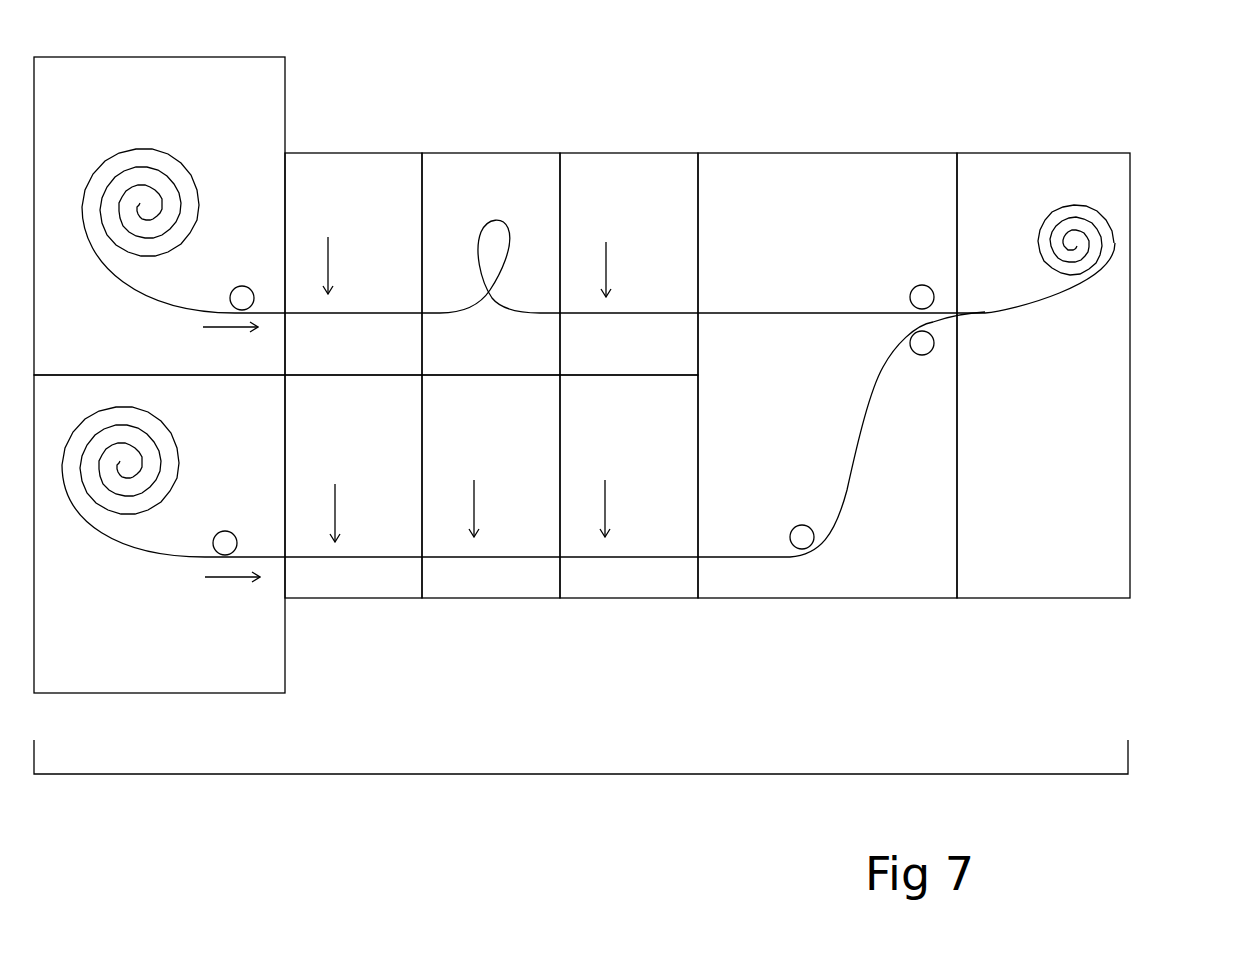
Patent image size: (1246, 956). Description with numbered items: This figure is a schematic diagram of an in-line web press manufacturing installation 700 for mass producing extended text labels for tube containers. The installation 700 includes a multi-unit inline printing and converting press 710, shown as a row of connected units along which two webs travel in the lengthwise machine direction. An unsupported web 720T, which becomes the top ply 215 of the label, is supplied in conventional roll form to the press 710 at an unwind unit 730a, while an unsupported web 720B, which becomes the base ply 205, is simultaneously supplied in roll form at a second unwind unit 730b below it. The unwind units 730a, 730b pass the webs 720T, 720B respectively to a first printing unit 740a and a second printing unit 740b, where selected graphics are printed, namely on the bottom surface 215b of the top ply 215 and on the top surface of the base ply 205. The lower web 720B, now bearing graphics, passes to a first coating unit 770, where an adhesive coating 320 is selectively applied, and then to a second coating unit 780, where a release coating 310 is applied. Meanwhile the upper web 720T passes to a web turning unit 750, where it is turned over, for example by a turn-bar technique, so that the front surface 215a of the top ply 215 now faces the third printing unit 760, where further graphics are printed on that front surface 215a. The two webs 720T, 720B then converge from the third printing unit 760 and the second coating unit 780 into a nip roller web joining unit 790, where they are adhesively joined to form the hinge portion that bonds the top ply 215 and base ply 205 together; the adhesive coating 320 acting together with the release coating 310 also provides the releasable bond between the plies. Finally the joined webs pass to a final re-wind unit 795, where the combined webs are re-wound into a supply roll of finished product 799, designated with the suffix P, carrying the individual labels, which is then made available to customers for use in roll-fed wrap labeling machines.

The in-line web press manufacturing installation 700 is at (760, 851).
The multi-unit inline printing and converting press 710 is at (577, 774).
The unsupported web 720T is at (598, 196).
The unsupported web 720B is at (558, 434).
The top ply 215 is at (261, 211).
The base ply 205 is at (523, 434).
The front surface 215a is at (158, 292).
The bottom surface 215b is at (200, 307).
The unwind unit 730a is at (160, 57).
The unwind unit 730b is at (158, 694).
The first printing unit 740a is at (320, 152).
The second printing unit 740b is at (325, 600).
The web turning unit 750 is at (450, 152).
The third printing unit 760 is at (588, 152).
The first coating unit 770 is at (462, 600).
The second coating unit 780 is at (595, 600).
The nip roller web joining unit 790 is at (785, 152).
The final re-wind unit 795 is at (980, 152).
The finished product 799 is at (1100, 235).
The adhesive coating 320 is at (501, 502).
The release coating 310 is at (632, 502).
The finished product P is at (1228, 212).